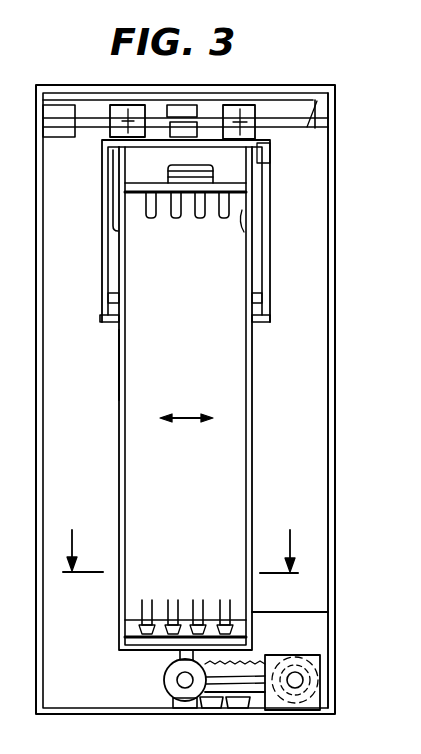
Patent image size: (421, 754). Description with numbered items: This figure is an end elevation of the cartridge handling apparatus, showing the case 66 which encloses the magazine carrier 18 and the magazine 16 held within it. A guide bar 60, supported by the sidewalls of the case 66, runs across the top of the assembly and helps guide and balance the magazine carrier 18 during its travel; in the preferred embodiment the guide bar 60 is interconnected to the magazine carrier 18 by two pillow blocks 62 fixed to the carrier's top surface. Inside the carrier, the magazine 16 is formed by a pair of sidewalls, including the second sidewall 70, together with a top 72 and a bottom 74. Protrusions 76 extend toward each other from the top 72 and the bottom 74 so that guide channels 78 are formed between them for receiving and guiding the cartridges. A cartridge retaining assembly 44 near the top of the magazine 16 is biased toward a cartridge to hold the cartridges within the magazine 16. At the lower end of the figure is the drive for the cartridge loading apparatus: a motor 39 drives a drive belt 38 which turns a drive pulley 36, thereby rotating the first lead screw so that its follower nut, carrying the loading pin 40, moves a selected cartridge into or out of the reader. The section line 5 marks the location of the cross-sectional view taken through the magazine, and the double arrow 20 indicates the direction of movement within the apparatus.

The section line 5- 5 is at (182, 533).
The magazine 16 is at (119, 362).
The magazine carrier 18 is at (102, 213).
The direction of reciprocation 20 is at (186, 418).
The drive pulley 36 is at (170, 694).
The drive belt 38 is at (230, 704).
The motor 39 is at (304, 712).
The loading pin 40 is at (247, 705).
The cartridge retaining assembly 44 is at (209, 162).
The guide bar 60 is at (336, 88).
The pillow blocks 62 is at (122, 108).
The case 66 is at (337, 219).
The second sidewall 70 is at (250, 474).
The top 72 is at (130, 191).
The bottom 74 is at (122, 650).
The protrusions 76 is at (151, 218).
The guide channels 78 is at (130, 216).